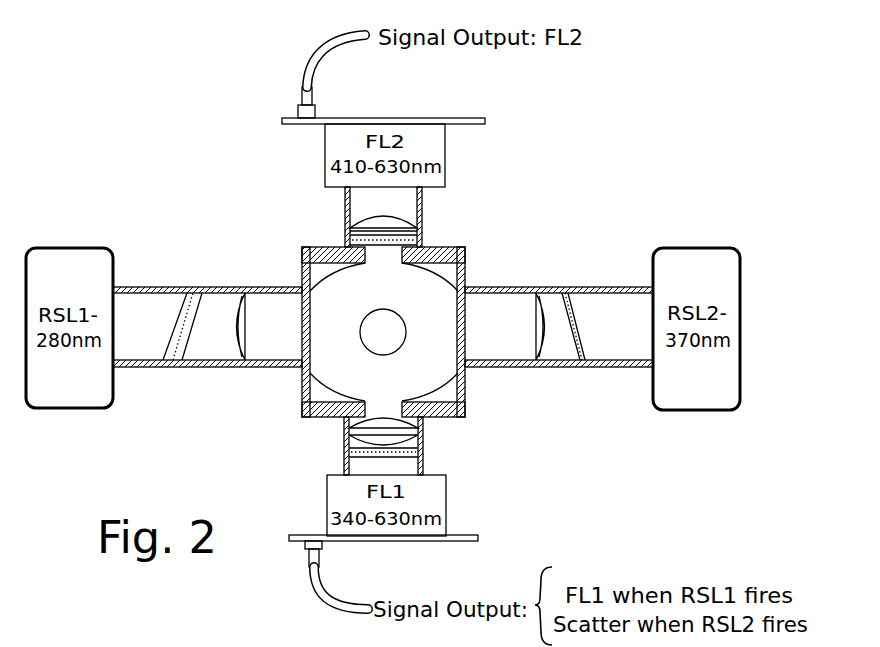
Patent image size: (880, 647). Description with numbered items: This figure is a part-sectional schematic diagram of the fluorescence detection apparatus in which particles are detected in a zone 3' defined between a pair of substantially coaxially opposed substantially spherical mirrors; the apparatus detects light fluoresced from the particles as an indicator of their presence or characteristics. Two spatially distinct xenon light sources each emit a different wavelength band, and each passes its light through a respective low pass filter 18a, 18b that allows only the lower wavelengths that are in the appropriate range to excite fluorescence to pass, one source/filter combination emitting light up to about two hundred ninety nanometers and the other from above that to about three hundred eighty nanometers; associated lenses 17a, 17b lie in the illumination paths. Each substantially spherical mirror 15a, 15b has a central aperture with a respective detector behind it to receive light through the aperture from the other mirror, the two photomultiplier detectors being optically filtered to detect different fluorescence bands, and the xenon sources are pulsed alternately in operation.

The sample particle 3' is at (433, 292).
The first detector optics assembly (lens and filter) 15a is at (430, 268).
The second detector optics assembly (lens and filter) 15b is at (433, 397).
The first source lens 17a is at (239, 310).
The second source lens 17b is at (549, 310).
The first source filter 18a is at (193, 291).
The second source filter 18b is at (572, 321).